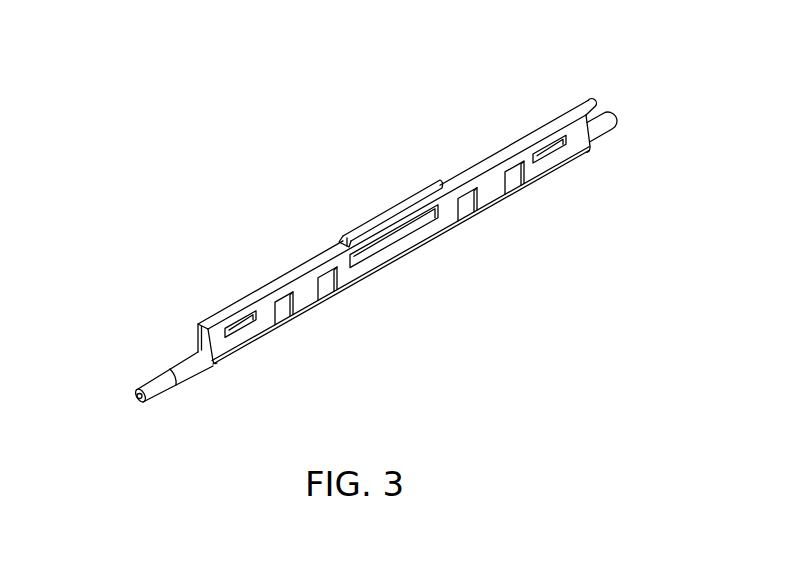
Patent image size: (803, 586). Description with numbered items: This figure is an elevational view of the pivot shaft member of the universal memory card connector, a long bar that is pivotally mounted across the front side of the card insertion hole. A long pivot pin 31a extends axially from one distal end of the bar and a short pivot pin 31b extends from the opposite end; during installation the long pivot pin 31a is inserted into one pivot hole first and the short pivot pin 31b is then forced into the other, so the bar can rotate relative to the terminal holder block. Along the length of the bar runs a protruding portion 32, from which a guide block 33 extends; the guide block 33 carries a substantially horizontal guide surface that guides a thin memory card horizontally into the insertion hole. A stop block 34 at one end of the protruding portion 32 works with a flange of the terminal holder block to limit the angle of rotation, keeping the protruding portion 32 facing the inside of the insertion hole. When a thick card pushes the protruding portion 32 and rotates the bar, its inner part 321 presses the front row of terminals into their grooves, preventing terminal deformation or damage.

The long pivot pin 31a is at (180, 367).
The short pivot pin 31b is at (614, 133).
The protruding portion 32 is at (282, 287).
The inner part 321 is at (311, 288).
The guide block 33 is at (400, 204).
The stop block 34 is at (590, 100).